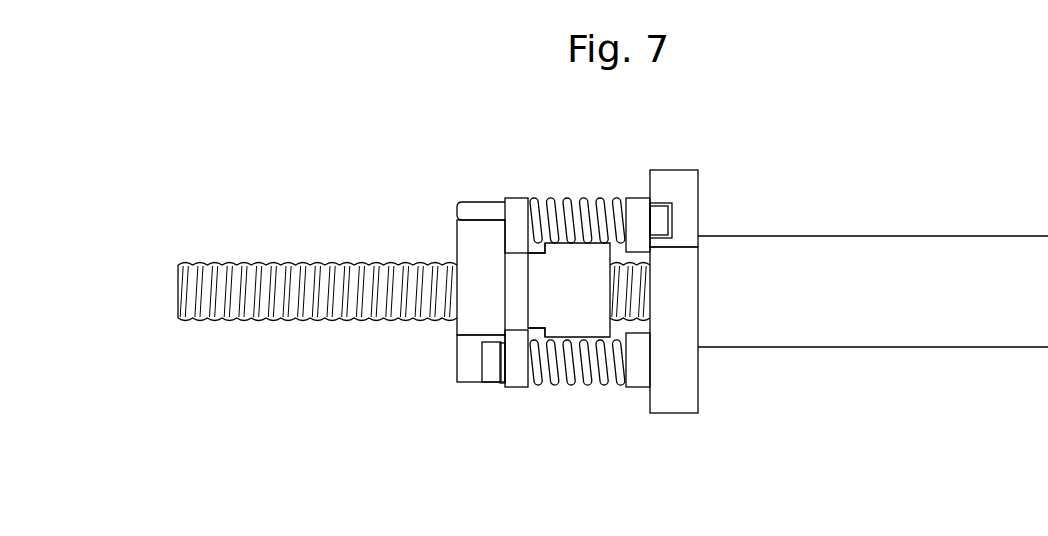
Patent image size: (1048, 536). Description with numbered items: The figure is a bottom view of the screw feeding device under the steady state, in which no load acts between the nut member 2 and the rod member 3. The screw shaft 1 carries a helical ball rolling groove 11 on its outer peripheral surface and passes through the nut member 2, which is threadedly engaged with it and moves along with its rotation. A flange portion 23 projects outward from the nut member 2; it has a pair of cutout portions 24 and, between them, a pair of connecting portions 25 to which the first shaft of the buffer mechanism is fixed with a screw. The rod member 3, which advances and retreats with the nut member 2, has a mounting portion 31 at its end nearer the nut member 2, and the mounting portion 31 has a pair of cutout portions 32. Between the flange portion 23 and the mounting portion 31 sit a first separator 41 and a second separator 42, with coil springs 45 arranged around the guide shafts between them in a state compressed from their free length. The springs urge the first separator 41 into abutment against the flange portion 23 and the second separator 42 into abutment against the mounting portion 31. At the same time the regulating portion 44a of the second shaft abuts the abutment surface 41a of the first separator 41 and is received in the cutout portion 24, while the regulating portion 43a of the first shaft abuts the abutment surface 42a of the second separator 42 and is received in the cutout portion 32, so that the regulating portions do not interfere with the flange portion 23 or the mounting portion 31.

The screw shaft 1 is at (317, 281).
The ball rolling groove 11 is at (311, 318).
The nut member 2 is at (629, 290).
The connecting portion 25 is at (550, 290).
The rod member 3 is at (933, 236).
The mounting portion 31 is at (687, 390).
The cutout portion 32 is at (687, 193).
The flange portion 23 is at (467, 236).
The cutout portion 24 is at (466, 343).
The first separator 41 is at (518, 205).
The abutment surface 41a is at (497, 384).
The second separator 42 is at (638, 205).
The abutment surface 42a is at (672, 220).
The regulating portion 43a is at (665, 207).
The regulating portion 44a is at (490, 358).
The coil spring 45 is at (562, 203).